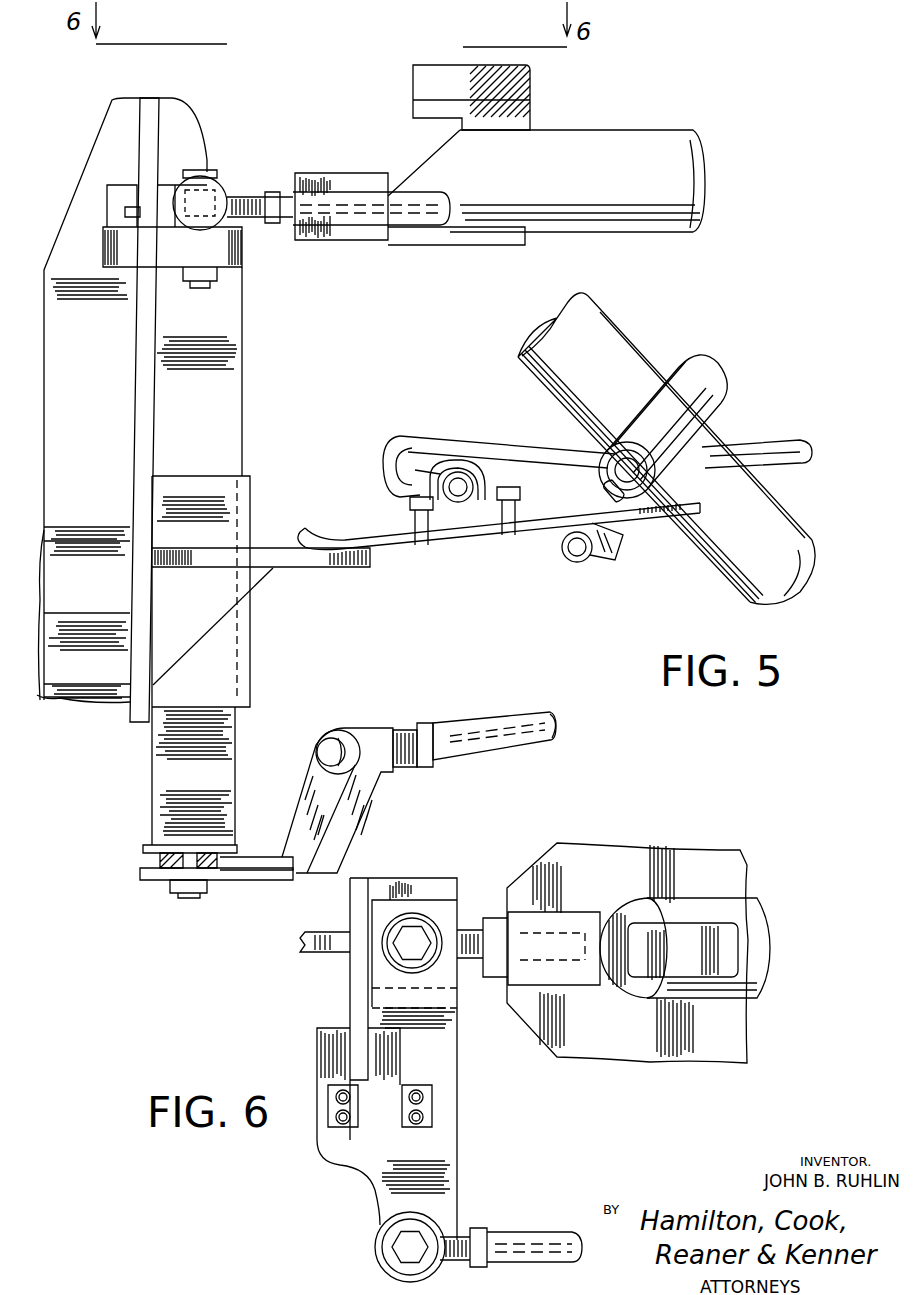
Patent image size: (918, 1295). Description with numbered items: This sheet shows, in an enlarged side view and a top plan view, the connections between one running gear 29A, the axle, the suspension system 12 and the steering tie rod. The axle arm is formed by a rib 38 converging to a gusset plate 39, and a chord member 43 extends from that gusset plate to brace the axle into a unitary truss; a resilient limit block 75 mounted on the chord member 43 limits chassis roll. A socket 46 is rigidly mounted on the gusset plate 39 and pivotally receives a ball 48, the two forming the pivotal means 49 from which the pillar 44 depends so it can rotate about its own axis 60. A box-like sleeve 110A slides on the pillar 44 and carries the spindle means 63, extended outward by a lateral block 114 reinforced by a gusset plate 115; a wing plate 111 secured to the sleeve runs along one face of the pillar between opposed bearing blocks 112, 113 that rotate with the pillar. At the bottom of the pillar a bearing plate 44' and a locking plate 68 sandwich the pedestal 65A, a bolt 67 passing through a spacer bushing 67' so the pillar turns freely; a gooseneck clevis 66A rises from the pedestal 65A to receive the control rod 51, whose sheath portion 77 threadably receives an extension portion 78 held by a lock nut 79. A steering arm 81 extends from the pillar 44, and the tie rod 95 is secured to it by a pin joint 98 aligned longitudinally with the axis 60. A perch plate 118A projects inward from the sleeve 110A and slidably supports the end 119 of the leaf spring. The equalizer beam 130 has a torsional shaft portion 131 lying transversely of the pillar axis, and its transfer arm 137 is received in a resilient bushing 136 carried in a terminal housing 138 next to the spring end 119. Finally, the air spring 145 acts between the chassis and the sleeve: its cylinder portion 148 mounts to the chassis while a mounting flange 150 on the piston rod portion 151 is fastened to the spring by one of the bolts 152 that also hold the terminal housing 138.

In FIG. 5, the suspension system 12 is at (767, 325).
In FIG. 5, the running gear 29A is at (66, 145).
In FIG. 5, the rib 38 is at (617, 347).
In FIG. 5, the gusset plate 39 is at (505, 237).
In FIG. 6, the gusset plate 39 is at (740, 870).
In FIG. 5, the chord member 43 is at (665, 142).
In FIG. 6, the chord member 43 is at (758, 920).
In FIG. 5, the pillar 44 is at (227, 556).
In FIG. 5, the bearing plate 44' is at (164, 833).
In FIG. 6, the socket 46 is at (445, 925).
In FIG. 6, the ball 48 is at (412, 915).
In FIG. 6, the pivotal means 49 is at (437, 887).
In FIG. 5, the control rod 51 is at (477, 717).
In FIG. 6, the axis 60 is at (405, 940).
In FIG. 5, the spindle means 63 is at (55, 704).
In FIG. 5, the pedestal 65A is at (148, 872).
In FIG. 5, the gooseneck clevis 66A is at (313, 820).
In FIG. 5, the bolt 67 is at (188, 903).
In FIG. 5, the spacer bushing 67' is at (151, 859).
In FIG. 5, the locking plate 68 is at (240, 877).
In FIG. 5, the resilient limit block 75 is at (513, 86).
In FIG. 5, the sheath portion 77 is at (556, 732).
In FIG. 5, the extension portion 78 is at (405, 733).
In FIG. 5, the lock nut 79 is at (430, 767).
In FIG. 5, the steering arm 81 is at (230, 247).
In FIG. 6, the steering arm 81 is at (395, 1183).
In FIG. 5, the tie rod 95 is at (433, 200).
In FIG. 6, the tie rod 95 is at (546, 1240).
In FIG. 5, the pin joint 98 is at (212, 200).
In FIG. 6, the pin joint 98 is at (408, 1247).
In FIG. 5, the box-like sleeve 110A is at (250, 655).
In FIG. 5, the wing plate 111 is at (150, 125).
In FIG. 6, the wing plate 111 is at (360, 985).
In FIG. 5, the bearing block 112 is at (127, 190).
In FIG. 6, the bearing block 112 is at (340, 1035).
In FIG. 5, the bearing block 113 is at (170, 188).
In FIG. 6, the bearing block 113 is at (380, 1023).
In FIG. 5, the lateral block 114 is at (87, 614).
In FIG. 5, the gusset plate 115 is at (87, 410).
In FIG. 6, the gusset plate 115 is at (305, 935).
In FIG. 5, the perch plate 118A is at (340, 568).
In FIG. 5, the spring end 119 is at (328, 538).
In FIG. 5, the equalizer beam 130 is at (506, 424).
In FIG. 5, the torsional shaft portion 131 is at (792, 450).
In FIG. 5, the resilient bushing 136 is at (465, 500).
In FIG. 5, the transfer arm 137 is at (400, 484).
In FIG. 5, the terminal housing 138 is at (448, 462).
In FIG. 5, the air spring 145 is at (740, 421).
In FIG. 5, the cylinder portion 148 is at (712, 397).
In FIG. 5, the mounting flange 150 is at (615, 550).
In FIG. 5, the piston rod portion 151 is at (606, 490).
In FIG. 5, the bolts 152 is at (512, 540).